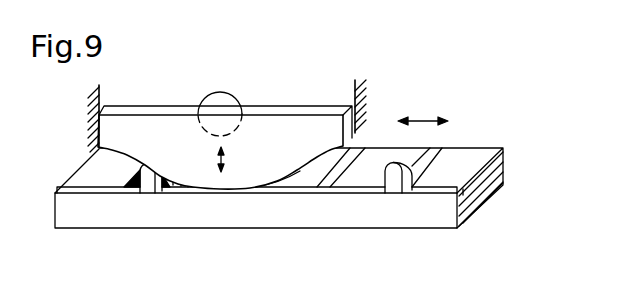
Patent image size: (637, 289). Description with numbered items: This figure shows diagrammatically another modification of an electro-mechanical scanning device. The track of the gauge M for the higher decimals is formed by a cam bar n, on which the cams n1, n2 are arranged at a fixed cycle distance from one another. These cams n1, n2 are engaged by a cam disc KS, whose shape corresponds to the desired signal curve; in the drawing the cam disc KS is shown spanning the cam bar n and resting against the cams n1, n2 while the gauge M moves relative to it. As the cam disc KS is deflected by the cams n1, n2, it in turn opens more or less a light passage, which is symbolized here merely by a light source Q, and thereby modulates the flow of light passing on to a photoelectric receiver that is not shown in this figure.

The light source Q is at (237, 103).
The cam disc KS is at (308, 125).
The gauge M is at (488, 119).
The cam n1 is at (148, 186).
The cam n2 is at (395, 182).
The cam bar n is at (460, 223).